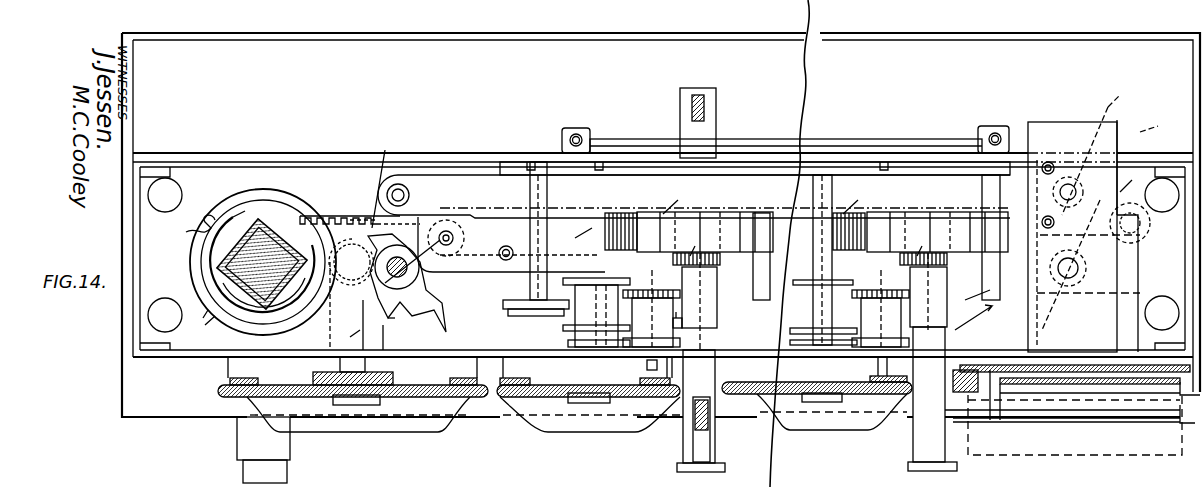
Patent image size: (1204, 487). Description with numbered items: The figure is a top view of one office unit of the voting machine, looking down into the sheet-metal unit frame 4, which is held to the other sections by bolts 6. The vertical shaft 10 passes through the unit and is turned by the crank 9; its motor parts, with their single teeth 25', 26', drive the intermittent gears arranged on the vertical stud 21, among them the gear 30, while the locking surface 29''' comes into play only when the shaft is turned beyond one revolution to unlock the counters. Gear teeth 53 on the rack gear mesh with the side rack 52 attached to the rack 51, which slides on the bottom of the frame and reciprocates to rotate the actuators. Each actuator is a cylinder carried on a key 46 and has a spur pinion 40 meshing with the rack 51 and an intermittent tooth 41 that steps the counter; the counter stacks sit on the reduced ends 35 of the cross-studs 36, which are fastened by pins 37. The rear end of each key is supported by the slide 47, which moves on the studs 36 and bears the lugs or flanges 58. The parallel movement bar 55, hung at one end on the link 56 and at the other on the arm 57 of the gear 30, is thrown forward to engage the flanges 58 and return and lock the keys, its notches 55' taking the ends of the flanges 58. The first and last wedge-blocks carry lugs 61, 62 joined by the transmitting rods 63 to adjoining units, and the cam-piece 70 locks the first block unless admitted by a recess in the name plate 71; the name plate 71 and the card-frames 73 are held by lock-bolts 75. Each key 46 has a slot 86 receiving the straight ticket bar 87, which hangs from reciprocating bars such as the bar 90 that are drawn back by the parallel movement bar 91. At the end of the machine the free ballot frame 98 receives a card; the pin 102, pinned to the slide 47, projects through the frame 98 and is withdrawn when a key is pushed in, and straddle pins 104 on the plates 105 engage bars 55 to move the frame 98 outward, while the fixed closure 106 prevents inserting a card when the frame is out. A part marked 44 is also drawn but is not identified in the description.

The unit frame 4 is at (207, 160).
The bolts 6 is at (663, 255).
The crank 9 is at (290, 471).
The shaft 10 is at (263, 262).
The vertical stud 21 is at (356, 306).
The single tooth 25' is at (197, 325).
The single tooth 26' is at (185, 228).
The locking surface 29''' is at (412, 290).
The intermittent gear 30 is at (395, 278).
The reduced ends 35 is at (760, 318).
The cross-studs 36 is at (746, 253).
The pins 37 is at (755, 168).
The spur pinion 40 is at (826, 273).
The intermittent tooth 41 is at (700, 320).
The gear 44 is at (718, 302).
The keys 46 is at (683, 451).
The slide 47 is at (865, 237).
The rack 51 is at (722, 244).
The side rack 52 is at (335, 216).
The gear teeth 53 is at (387, 179).
The parallel movement bar 55 is at (694, 196).
The notches 55' is at (772, 197).
The link 56 is at (1134, 177).
The arm 57 is at (495, 251).
The lugs or flanges 58 is at (806, 234).
The lug 61 is at (586, 131).
The lug 62 is at (995, 127).
The transmitting bars 63 is at (860, 140).
The cam-piece 70 is at (352, 333).
The name plate 71 is at (395, 376).
The card-frames 73 is at (526, 386).
The lock-bolts 75 is at (357, 404).
The notches or slots 86 is at (708, 447).
The straight ticket bar 87 is at (710, 425).
The reciprocating bar 90 is at (700, 139).
The parallel movement bar 91 is at (706, 108).
The frame 98 is at (1057, 385).
The pin 102 is at (1005, 376).
The straddle pins 104 is at (1142, 109).
The plates 105 is at (1089, 229).
The fixed closure 106 is at (1178, 398).